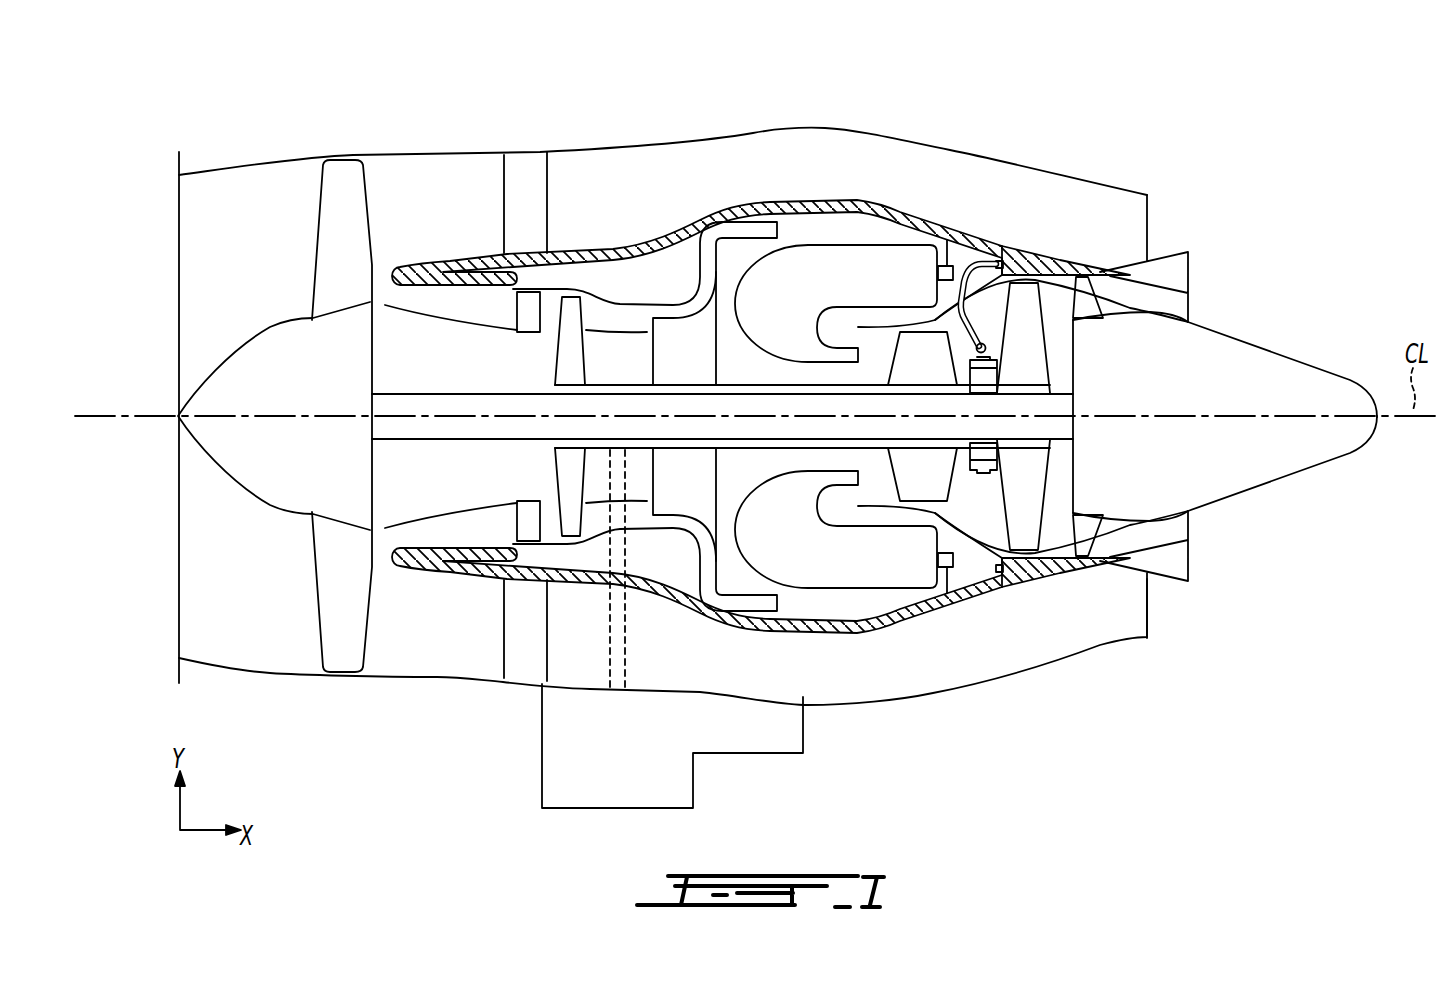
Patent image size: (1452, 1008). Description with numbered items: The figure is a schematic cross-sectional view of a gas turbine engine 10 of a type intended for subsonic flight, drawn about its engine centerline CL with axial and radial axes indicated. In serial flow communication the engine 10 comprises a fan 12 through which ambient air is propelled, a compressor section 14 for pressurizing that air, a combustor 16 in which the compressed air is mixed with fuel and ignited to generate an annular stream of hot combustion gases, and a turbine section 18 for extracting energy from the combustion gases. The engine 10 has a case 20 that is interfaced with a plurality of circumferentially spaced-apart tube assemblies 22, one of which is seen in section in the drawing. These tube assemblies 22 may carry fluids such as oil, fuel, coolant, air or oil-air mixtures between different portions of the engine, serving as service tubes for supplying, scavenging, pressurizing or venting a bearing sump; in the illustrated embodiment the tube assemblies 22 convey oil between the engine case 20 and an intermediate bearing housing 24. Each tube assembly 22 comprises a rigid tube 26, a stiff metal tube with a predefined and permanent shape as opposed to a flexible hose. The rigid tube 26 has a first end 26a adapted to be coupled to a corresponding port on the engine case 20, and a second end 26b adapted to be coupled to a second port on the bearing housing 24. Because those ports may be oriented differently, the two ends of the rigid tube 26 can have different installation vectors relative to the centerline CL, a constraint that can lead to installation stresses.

The gas turbine engine 10 is at (1258, 143).
The fan 12 is at (290, 218).
The compressor section 14 is at (611, 302).
The combustor 16 is at (842, 273).
The turbine section 18 is at (962, 523).
The engine case 20 is at (987, 236).
The tube assembly 22 is at (996, 264).
The intermediate bearing housing 24 is at (985, 473).
The rigid tube 26 is at (972, 322).
The first end 26a is at (1003, 276).
The second end 26b is at (950, 350).